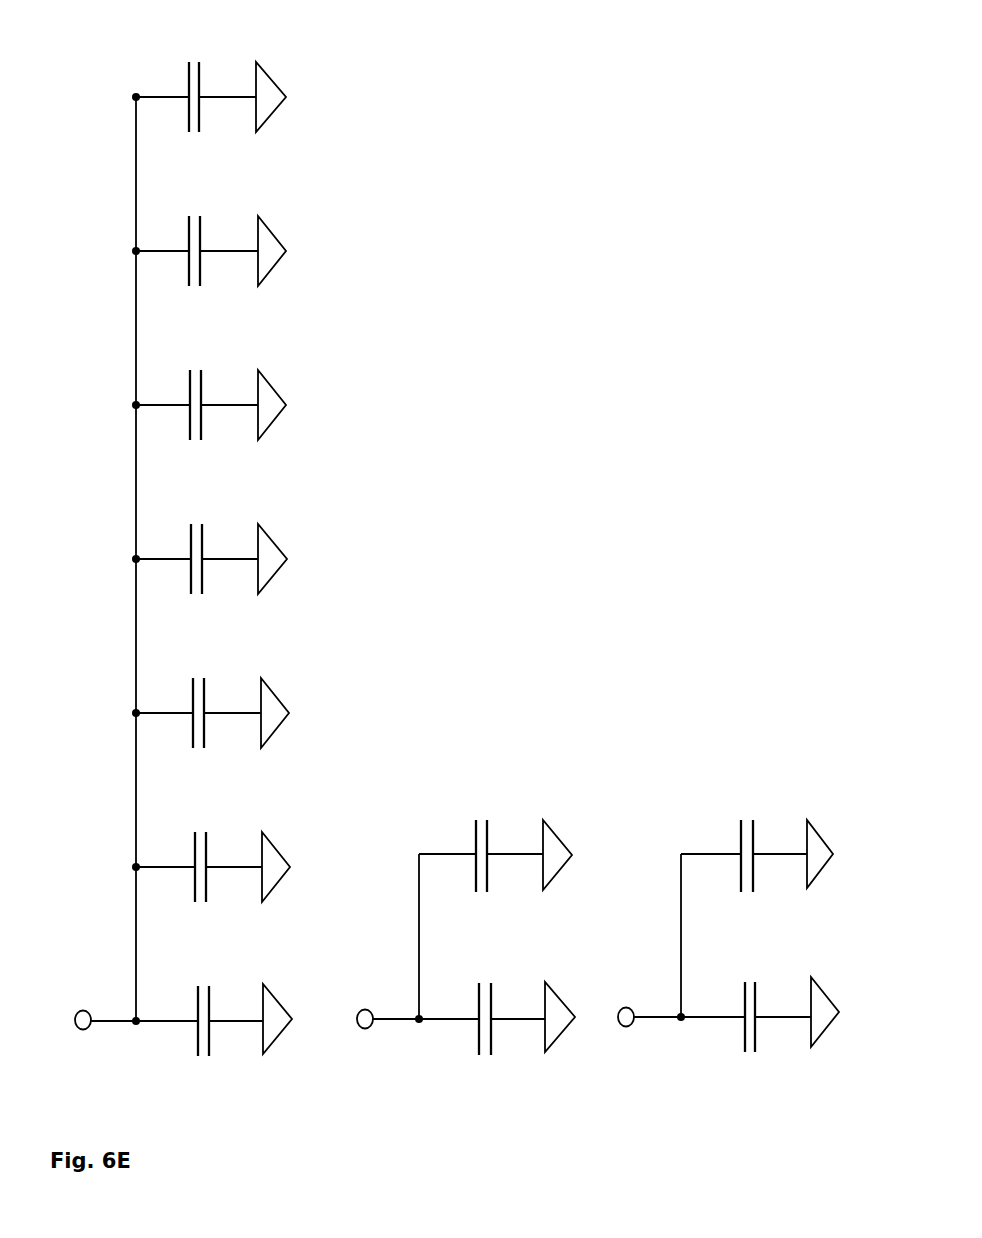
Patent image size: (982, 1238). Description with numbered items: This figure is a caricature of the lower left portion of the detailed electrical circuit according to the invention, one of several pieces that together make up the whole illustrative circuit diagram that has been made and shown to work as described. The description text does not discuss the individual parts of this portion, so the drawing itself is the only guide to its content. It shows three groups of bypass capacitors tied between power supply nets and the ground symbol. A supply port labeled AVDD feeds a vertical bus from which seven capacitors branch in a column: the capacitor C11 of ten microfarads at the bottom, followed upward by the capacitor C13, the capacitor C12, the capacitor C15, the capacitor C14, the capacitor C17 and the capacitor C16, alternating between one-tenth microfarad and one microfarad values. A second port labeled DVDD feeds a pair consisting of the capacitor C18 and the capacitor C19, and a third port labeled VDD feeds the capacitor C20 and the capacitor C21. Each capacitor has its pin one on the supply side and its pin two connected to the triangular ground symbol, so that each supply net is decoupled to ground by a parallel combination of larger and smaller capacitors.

The capacitor C11 10uF C11 is at (200, 1067).
The capacitor C12 1.0uF C12 is at (198, 751).
The capacitor C13 0.1uF C13 is at (200, 906).
The capacitor C14 1.0uF C14 is at (191, 449).
The capacitor C15 0.1uF C15 is at (192, 603).
The capacitor C16 1.0uF C16 is at (190, 139).
The capacitor C17 0.1uF C17 is at (190, 293).
The capacitor C18 1.0uF C18 is at (483, 816).
The capacitor C19 0.1uF C19 is at (483, 1066).
The capacitor C20 1.0uF C20 is at (746, 816).
The capacitor C21 0.1uF C21 is at (747, 1063).
The analog supply voltage port AVDD is at (84, 1008).
The digital supply voltage port DVDD is at (367, 1029).
The supply voltage port VDD is at (628, 1027).